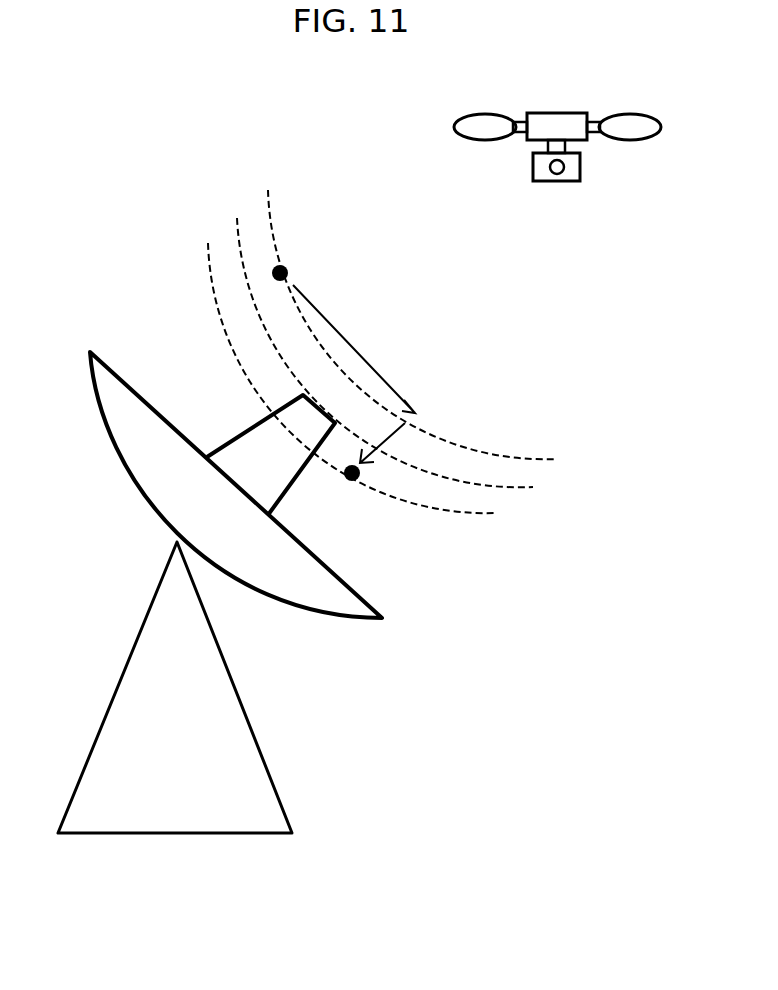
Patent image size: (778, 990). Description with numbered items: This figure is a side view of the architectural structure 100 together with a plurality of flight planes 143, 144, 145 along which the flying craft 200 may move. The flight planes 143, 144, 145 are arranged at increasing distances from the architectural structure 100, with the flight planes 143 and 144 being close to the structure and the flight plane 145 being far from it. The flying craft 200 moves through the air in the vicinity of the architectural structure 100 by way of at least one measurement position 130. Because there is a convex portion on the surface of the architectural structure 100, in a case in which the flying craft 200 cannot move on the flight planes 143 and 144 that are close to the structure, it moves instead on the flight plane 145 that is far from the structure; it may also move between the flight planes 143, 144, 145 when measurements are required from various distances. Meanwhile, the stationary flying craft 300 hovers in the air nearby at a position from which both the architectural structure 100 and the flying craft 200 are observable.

The architectural structure 100 is at (90, 352).
The measurement position 130 is at (352, 480).
The flight plane 143 is at (208, 243).
The flight plane 144 is at (533, 487).
The flight plane 145 is at (268, 190).
The flying craft 200 is at (288, 270).
The stationary flying craft 300 is at (560, 113).